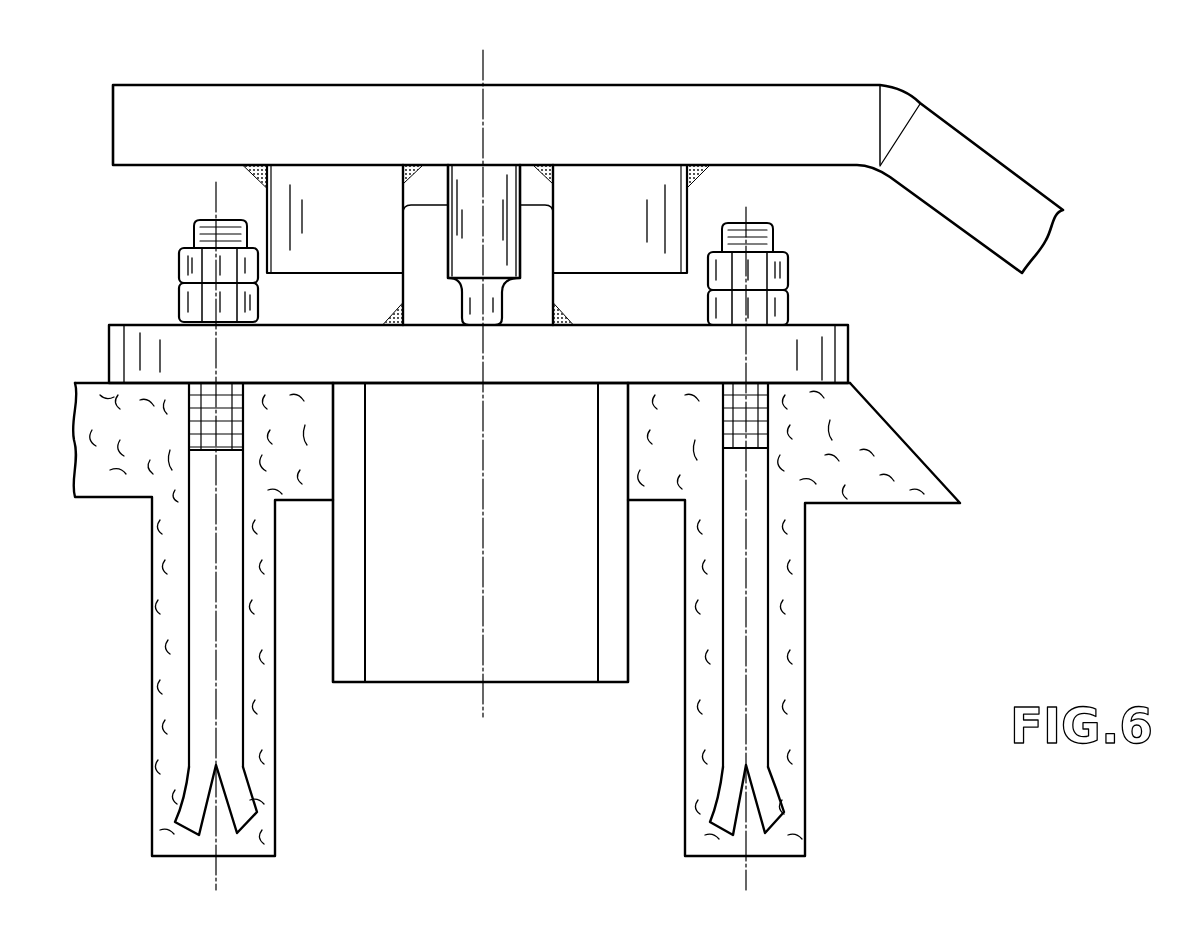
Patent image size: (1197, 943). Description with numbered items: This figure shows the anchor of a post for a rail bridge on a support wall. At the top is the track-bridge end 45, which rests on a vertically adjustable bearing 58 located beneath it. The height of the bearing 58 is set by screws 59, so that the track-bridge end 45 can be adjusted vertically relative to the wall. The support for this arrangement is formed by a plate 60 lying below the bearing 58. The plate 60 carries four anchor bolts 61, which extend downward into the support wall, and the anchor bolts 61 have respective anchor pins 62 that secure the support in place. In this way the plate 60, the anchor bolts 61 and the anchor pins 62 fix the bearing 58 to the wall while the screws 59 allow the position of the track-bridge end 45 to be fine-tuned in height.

The track-bridge end 45 is at (788, 84).
The vertically adjustable bearing 58 is at (707, 185).
The screws 59 is at (472, 247).
The plate 60 is at (822, 350).
The anchor bolts 61 is at (767, 410).
The anchor pins 62 is at (553, 655).